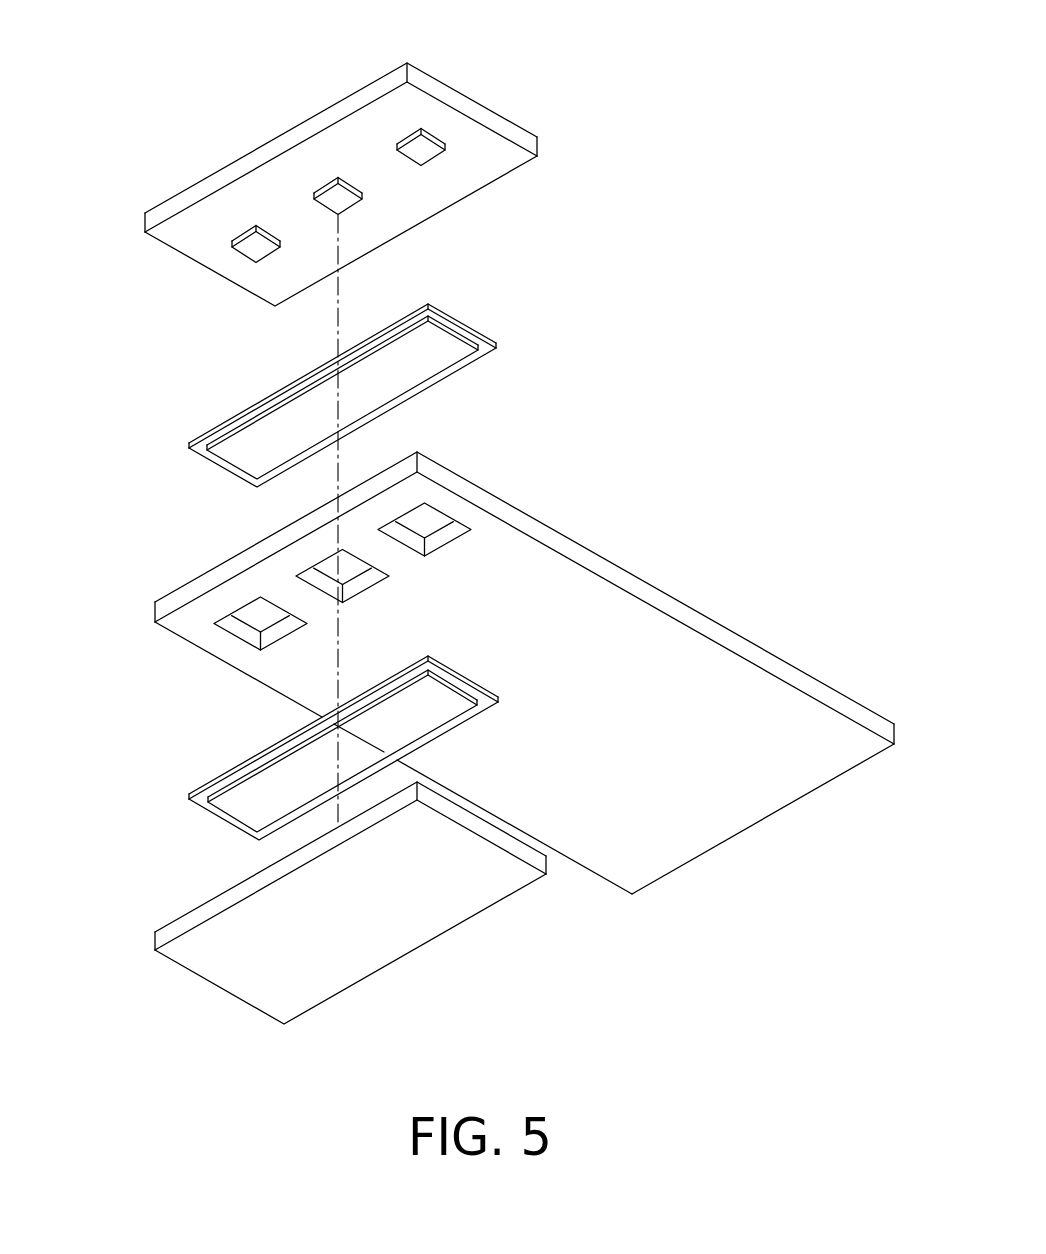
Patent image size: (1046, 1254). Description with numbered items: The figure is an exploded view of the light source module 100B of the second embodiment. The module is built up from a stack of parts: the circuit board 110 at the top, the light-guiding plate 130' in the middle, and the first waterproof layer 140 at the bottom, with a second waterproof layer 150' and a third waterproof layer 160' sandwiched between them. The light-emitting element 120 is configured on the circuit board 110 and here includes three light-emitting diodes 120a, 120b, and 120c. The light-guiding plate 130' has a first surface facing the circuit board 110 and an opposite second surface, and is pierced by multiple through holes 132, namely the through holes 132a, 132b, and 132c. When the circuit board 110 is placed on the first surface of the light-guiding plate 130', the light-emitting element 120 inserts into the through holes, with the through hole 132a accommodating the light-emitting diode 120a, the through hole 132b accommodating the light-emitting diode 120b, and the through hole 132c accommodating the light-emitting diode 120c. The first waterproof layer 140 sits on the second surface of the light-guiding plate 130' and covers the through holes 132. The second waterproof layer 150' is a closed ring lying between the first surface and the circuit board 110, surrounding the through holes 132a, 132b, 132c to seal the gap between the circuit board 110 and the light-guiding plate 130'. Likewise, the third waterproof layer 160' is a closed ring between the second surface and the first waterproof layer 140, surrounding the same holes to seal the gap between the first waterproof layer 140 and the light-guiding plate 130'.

The light source module 100B is at (498, 536).
The circuit board 110 is at (471, 158).
The light-emitting element 120 is at (527, 137).
The light-emitting diode 120a is at (254, 247).
The light-emitting diode 120b is at (330, 195).
The light-emitting diode 120c is at (413, 146).
The light-guiding plate 130' is at (477, 590).
The through hole 132 is at (468, 469).
The through hole 132a is at (249, 618).
The through hole 132b is at (345, 573).
The through hole 132c is at (423, 530).
The first waterproof layer 140 is at (168, 924).
The second waterproof layer 150' is at (286, 395).
The third waterproof layer 160' is at (287, 748).